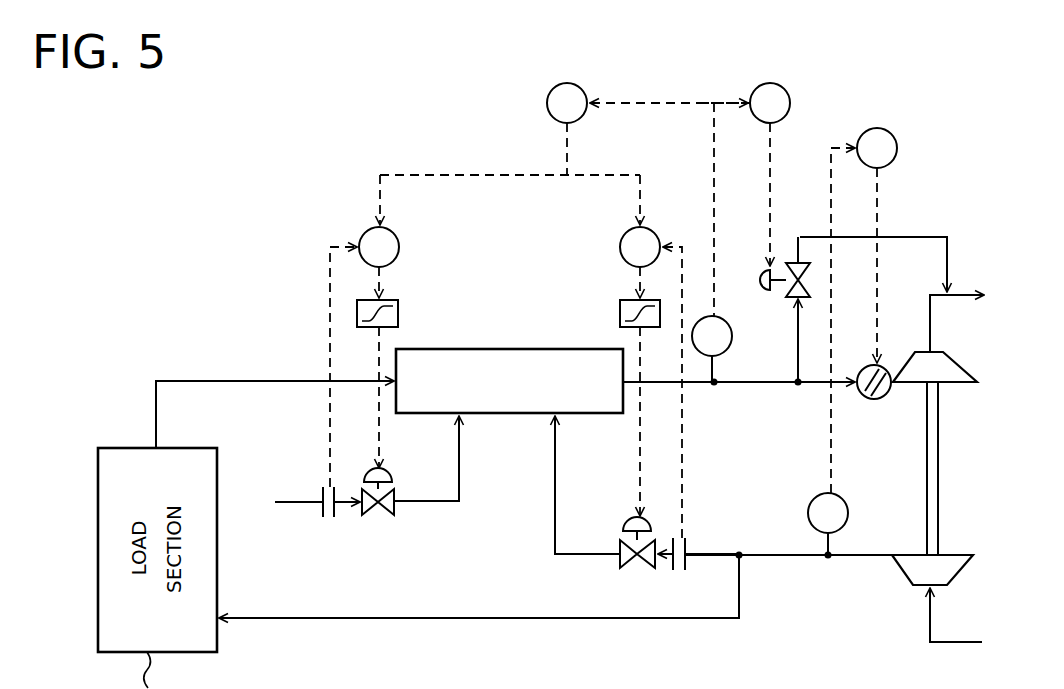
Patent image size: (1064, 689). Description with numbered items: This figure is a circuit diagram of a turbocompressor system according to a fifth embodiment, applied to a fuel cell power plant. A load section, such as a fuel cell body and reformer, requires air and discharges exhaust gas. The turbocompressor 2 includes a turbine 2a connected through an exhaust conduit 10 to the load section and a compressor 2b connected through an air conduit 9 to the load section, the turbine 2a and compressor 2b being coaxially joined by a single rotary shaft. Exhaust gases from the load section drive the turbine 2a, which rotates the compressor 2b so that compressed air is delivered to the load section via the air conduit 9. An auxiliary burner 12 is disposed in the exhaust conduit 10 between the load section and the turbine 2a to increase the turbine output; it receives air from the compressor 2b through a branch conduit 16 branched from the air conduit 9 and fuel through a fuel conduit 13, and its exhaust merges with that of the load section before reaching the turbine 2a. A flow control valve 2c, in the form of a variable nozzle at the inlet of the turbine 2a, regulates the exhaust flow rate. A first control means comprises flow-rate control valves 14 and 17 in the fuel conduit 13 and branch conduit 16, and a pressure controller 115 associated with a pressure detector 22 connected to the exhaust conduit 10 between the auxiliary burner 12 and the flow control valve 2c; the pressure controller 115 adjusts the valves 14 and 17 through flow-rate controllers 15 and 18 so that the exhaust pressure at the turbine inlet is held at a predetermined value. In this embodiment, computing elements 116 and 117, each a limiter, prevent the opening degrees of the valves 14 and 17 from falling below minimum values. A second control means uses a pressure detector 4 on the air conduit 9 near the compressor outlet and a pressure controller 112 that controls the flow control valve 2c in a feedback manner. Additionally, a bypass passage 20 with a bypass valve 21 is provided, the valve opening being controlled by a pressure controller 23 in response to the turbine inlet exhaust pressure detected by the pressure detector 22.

The pressure controller 115 is at (567, 83).
The pressure controller 23 is at (770, 83).
The pressure controller 112 is at (877, 128).
The bypass passage 20 is at (925, 237).
The flow-rate controller 15 is at (400, 247).
The flow-rate controller 18 is at (620, 246).
The bypass valve 21 is at (758, 285).
The computing element 116 is at (400, 312).
The computing element 117 is at (620, 312).
The auxiliary burner 12 is at (508, 349).
The pressure detector 22 is at (731, 343).
The exhaust conduit 10 is at (247, 380).
The turbine 2a is at (960, 362).
The flow control valve 2c is at (874, 400).
The turbocompressor 2 is at (946, 441).
The flow-rate control valve 14 is at (388, 516).
The fuel conduit 13 is at (445, 502).
The branch conduit 16 is at (554, 536).
The pressure detector 4 is at (849, 510).
The flow-rate control valve 17 is at (637, 569).
The compressor 2b is at (963, 566).
The air conduit 9 is at (452, 620).